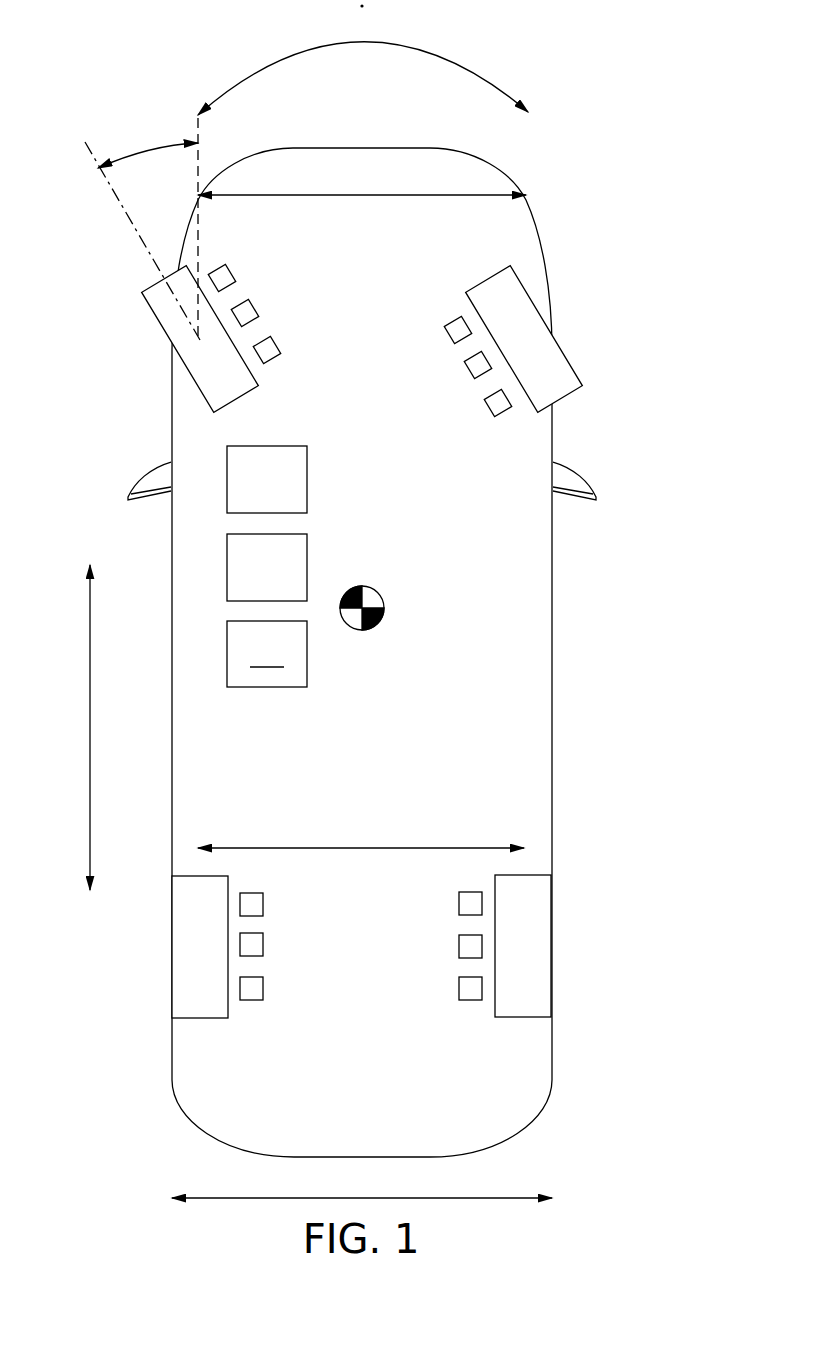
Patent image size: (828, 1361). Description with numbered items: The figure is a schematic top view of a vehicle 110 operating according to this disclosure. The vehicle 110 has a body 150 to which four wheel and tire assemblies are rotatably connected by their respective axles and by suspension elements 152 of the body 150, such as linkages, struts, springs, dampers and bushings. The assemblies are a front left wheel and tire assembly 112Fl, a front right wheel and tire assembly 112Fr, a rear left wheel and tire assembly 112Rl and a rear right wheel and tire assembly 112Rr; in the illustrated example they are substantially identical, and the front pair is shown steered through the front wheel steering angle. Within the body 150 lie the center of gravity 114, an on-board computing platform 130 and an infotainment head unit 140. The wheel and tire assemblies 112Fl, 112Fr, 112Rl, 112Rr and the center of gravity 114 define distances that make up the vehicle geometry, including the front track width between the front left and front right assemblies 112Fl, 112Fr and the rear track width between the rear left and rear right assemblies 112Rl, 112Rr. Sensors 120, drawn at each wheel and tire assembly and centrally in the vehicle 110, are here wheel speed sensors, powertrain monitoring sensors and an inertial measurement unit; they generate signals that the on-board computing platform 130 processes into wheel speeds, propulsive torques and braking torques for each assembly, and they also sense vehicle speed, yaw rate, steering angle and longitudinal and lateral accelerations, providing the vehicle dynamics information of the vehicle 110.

The vehicle 110 is at (360, 601).
The front left wheel and tire assembly 112Fl is at (150, 316).
The front right wheel and tire assembly 112Fr is at (565, 352).
The rear left wheel and tire assembly 112Rl is at (172, 968).
The rear right wheel and tire assembly 112Rr is at (551, 968).
The center of gravity 114 is at (384, 613).
The sensors 120 is at (233, 272).
The on-board computing platform 130 is at (250, 502).
The infotainment head unit 140 is at (250, 590).
The body 150 is at (551, 758).
The suspension elements 152 is at (257, 306).